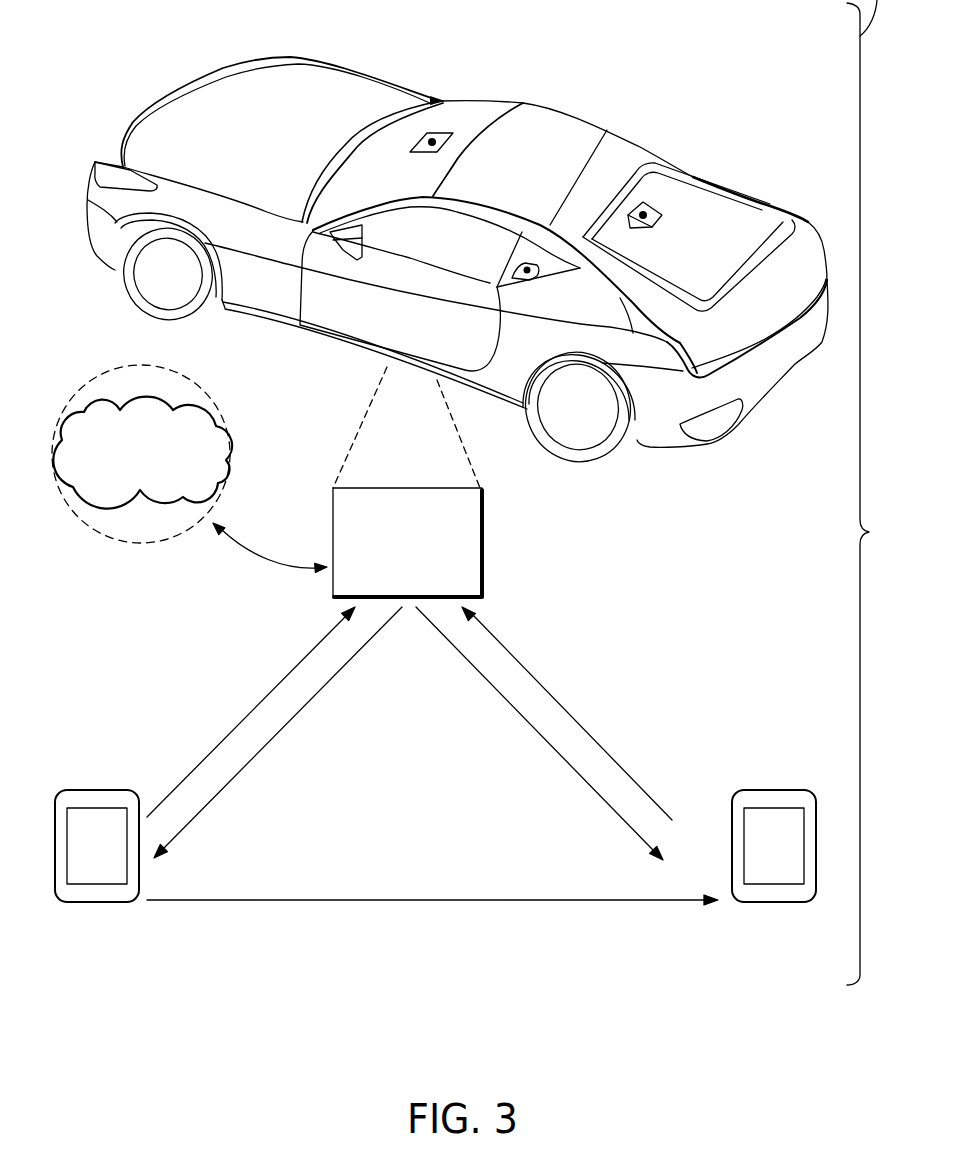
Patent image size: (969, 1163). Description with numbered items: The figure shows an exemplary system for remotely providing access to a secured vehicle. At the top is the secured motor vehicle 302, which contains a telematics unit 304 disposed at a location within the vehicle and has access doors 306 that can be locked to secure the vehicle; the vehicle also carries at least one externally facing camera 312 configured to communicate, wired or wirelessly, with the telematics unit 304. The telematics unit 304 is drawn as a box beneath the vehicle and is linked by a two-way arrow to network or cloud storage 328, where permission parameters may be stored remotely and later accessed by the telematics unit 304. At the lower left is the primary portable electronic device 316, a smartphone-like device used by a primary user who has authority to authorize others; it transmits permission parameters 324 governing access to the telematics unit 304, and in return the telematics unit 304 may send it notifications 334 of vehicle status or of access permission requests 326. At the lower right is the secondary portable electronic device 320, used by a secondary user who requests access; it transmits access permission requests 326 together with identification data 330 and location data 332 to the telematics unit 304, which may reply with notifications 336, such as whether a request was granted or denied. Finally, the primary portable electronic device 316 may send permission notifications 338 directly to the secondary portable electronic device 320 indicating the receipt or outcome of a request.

The secured motor vehicle 302 is at (116, 133).
The telematics unit 304 is at (483, 541).
The access doors 306 is at (626, 122).
The externally facing camera 312 is at (431, 135).
The primary portable electronic device 316 is at (115, 790).
The secondary portable electronic device 320 is at (792, 790).
The permission parameters 324 is at (282, 679).
The access permission requests 326 is at (680, 693).
The network or cloud storage 328 is at (229, 445).
The identification data 330 is at (534, 677).
The location data 332 is at (708, 678).
The notifications 334 is at (288, 724).
The notifications 336 is at (604, 801).
The permission notifications 338 is at (551, 900).